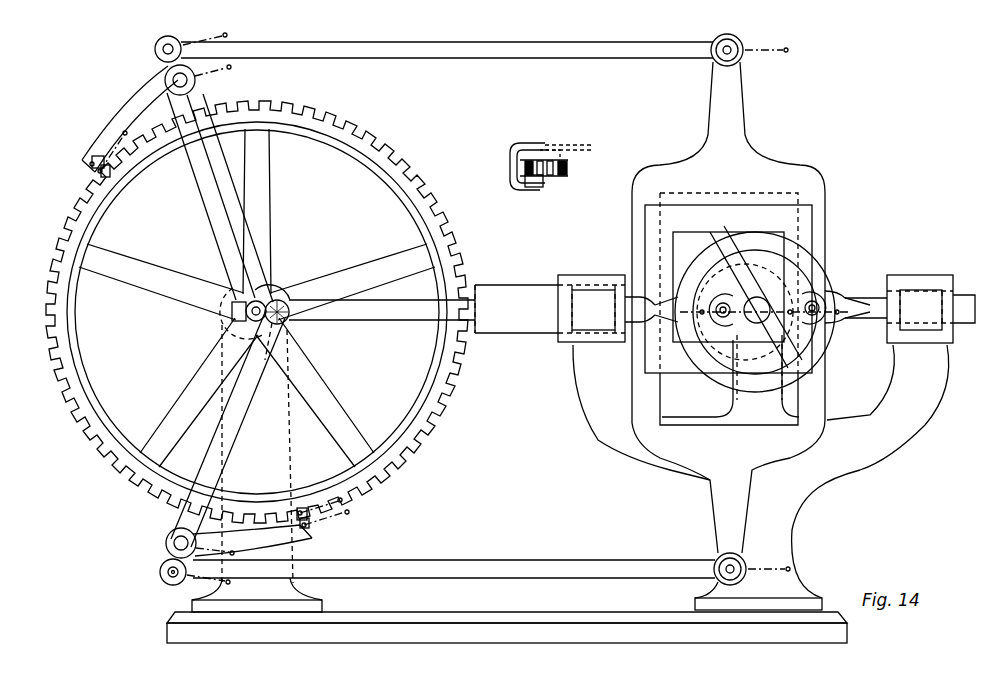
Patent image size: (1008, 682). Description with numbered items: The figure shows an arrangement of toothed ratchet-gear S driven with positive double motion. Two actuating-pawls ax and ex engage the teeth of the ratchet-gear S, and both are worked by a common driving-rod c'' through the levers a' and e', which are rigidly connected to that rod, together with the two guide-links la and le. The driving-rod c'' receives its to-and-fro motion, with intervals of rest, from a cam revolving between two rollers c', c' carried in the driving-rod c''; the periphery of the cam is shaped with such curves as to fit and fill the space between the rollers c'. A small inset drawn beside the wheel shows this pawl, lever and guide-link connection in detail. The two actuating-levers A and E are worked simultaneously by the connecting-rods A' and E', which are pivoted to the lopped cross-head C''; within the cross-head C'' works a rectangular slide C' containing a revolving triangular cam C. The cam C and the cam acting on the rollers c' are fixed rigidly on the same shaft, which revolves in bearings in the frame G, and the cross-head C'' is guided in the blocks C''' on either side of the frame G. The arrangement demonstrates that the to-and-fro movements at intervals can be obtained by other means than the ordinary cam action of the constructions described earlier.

The toothed ratchet-gear S is at (390, 150).
The connecting-rod E' is at (471, 59).
The actuating-lever E is at (210, 182).
The lever e' is at (235, 198).
The actuating-pawl ex is at (127, 112).
The guide-link le is at (280, 297).
The guide-link la is at (289, 325).
The actuating-lever A is at (225, 434).
The lever a' is at (195, 516).
The actuating-pawl ax is at (310, 541).
The connecting-rod A' is at (491, 561).
The frame G is at (513, 484).
The lopped cross-head C'' is at (761, 307).
The driving-rod c'' is at (643, 236).
The guide block C''' is at (714, 317).
The triangular cam C is at (761, 309).
The rollers c' is at (767, 310).
The rectangular slide C' is at (749, 322).
The detail inset is at (525, 167).